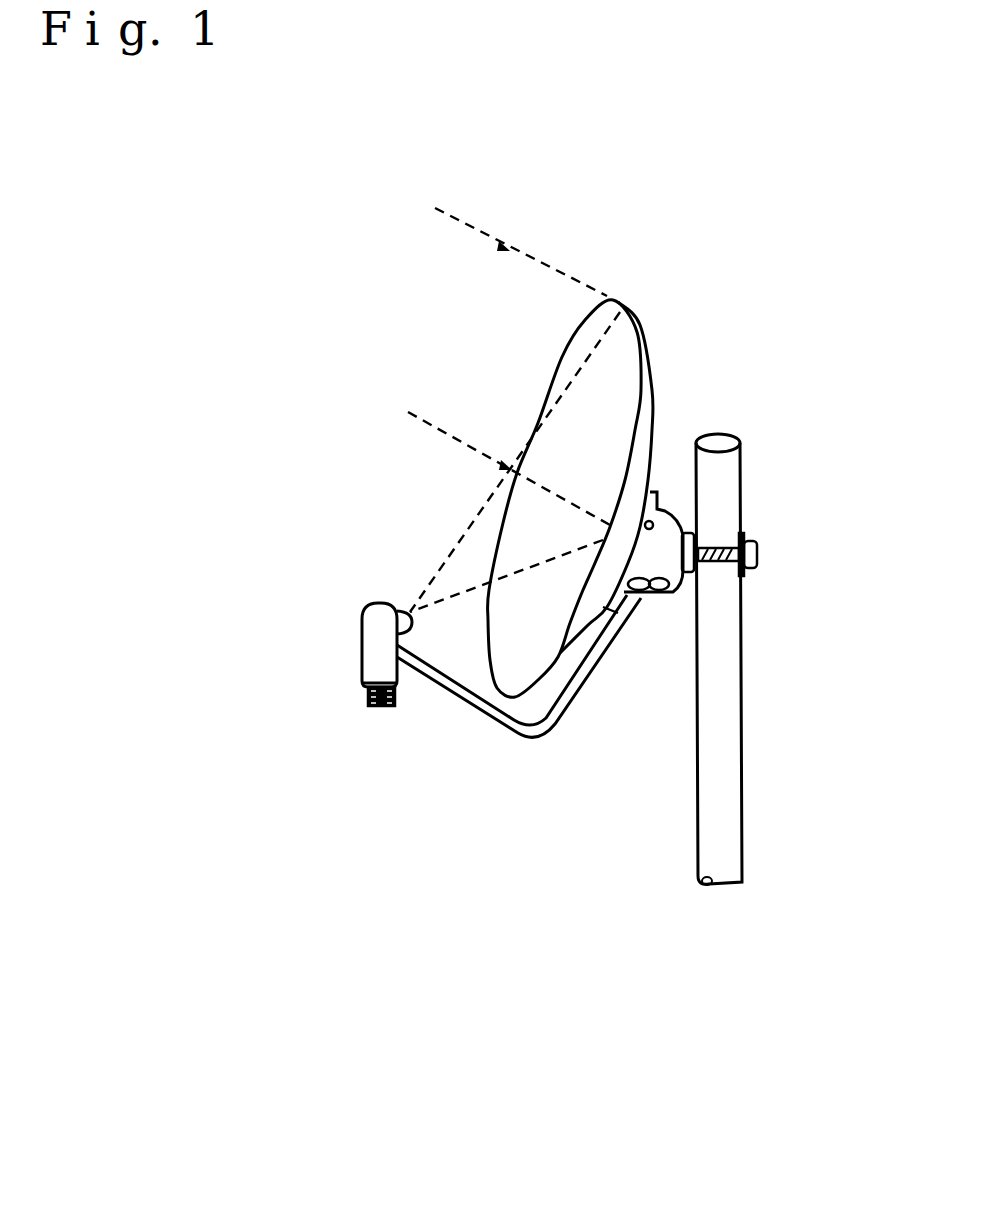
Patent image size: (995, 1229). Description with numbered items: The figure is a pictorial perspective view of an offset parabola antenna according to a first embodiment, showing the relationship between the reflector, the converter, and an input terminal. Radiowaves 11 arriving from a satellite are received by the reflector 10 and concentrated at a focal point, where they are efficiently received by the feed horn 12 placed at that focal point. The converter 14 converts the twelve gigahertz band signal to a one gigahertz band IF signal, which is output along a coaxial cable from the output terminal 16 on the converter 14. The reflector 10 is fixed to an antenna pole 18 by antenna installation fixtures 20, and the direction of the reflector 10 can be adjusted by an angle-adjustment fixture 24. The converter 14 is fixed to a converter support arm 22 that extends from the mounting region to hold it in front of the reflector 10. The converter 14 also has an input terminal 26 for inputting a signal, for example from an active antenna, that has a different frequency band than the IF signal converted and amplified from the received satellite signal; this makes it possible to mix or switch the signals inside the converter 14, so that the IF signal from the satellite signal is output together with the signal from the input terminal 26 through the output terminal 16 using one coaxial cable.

The reflector 10 is at (652, 323).
The radiowaves 11 is at (435, 208).
The feed horn 12 is at (405, 602).
The converter 14 is at (350, 645).
The output terminal 16 is at (400, 703).
The antenna pole 18 is at (745, 760).
The antenna installation fixtures 20 is at (758, 535).
The converter support arm 22 is at (600, 685).
The angle-adjustment fixture 24 is at (657, 592).
The input terminal 26 is at (378, 706).